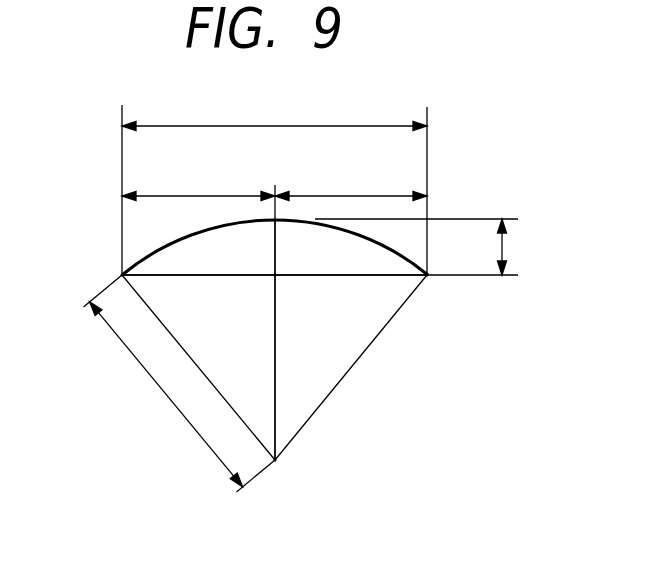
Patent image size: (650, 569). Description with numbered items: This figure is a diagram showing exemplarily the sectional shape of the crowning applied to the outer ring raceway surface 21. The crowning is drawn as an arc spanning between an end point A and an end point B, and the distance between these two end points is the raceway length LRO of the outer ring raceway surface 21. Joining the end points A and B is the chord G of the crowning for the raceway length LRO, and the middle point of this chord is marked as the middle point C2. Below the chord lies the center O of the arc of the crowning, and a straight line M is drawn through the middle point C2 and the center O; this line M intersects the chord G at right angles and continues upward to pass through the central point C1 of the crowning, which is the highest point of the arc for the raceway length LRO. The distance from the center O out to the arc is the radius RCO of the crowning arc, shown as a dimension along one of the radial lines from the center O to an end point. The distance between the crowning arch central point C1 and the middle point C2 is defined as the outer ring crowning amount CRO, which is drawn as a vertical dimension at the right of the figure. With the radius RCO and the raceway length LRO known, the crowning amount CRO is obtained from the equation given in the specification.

The outer ring raceway surface 21 is at (158, 250).
The end point A is at (107, 273).
The end point B is at (440, 288).
The central point of the crowning C1 is at (289, 233).
The middle point of the chord C2 is at (289, 288).
The chord G is at (382, 292).
The straight line M is at (290, 398).
The center of the arc O is at (286, 477).
The raceway length LRO is at (274, 148).
The outer ring crowning amount CRO is at (531, 247).
The radius of the crowning arc RCO is at (180, 383).